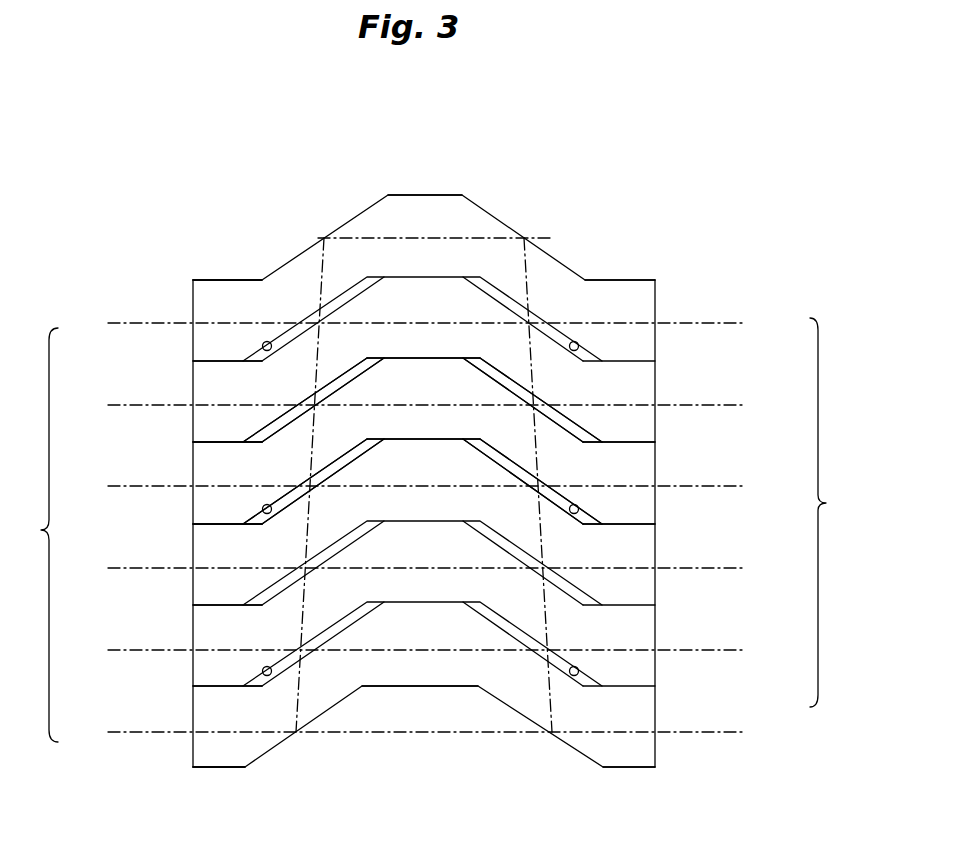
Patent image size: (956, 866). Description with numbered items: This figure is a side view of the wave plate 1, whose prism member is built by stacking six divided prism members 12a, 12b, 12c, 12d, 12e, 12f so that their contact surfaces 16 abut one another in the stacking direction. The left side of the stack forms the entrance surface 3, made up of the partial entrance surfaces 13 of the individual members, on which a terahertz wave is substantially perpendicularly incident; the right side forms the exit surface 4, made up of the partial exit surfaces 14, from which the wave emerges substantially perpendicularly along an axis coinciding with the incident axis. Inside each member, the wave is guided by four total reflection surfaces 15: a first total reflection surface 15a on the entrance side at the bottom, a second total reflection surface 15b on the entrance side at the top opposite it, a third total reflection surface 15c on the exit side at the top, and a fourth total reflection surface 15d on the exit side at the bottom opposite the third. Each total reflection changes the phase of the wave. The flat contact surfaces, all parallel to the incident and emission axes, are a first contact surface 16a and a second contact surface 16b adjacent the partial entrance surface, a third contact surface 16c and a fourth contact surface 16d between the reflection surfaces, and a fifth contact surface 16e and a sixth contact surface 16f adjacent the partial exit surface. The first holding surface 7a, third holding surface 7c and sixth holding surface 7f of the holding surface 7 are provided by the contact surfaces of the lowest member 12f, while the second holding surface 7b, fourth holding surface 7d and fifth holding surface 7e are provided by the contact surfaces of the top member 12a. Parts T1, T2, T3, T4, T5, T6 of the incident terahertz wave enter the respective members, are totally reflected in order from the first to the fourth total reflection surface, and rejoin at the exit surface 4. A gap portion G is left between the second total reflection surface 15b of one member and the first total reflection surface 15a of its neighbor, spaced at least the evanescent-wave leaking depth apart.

The wave plate 1 is at (558, 128).
The entrance surface 3 is at (42, 535).
The exit surface 4 is at (828, 512).
The holding surface 7 is at (426, 490).
The first holding surface 7a is at (217, 768).
The second holding surface 7b is at (242, 280).
The third holding surface 7c is at (425, 687).
The fourth holding surface 7d is at (430, 194).
The fifth holding surface 7e is at (627, 768).
The sixth holding surface 7f is at (617, 280).
The divided prism member 12a is at (207, 284).
The divided prism member 12b is at (207, 387).
The divided prism member 12c is at (208, 473).
The divided prism member 12d is at (206, 532).
The divided prism member 12e is at (206, 633).
The divided prism member 12f is at (203, 756).
The partial entrance surface 13 is at (192, 340).
The partial exit surface 14 is at (657, 343).
The total reflection surface 15 is at (422, 425).
The first total reflection surface 15a is at (345, 456).
The second total reflection surface 15b is at (344, 378).
The third total reflection surface 15c is at (498, 378).
The fourth total reflection surface 15d is at (496, 458).
The contact surface 16 is at (424, 481).
The first contact surface 16a is at (242, 540).
The second contact surface 16b is at (228, 441).
The third contact surface 16c is at (425, 441).
The fourth contact surface 16d is at (424, 357).
The fifth contact surface 16e is at (612, 526).
The sixth contact surface 16f is at (623, 441).
The gap portion G is at (262, 346).
The part of terahertz wave T1 is at (690, 323).
The part of terahertz wave T2 is at (690, 405).
The part of terahertz wave T3 is at (690, 486).
The part of terahertz wave T4 is at (690, 568).
The part of terahertz wave T5 is at (690, 650).
The part of terahertz wave T6 is at (690, 732).